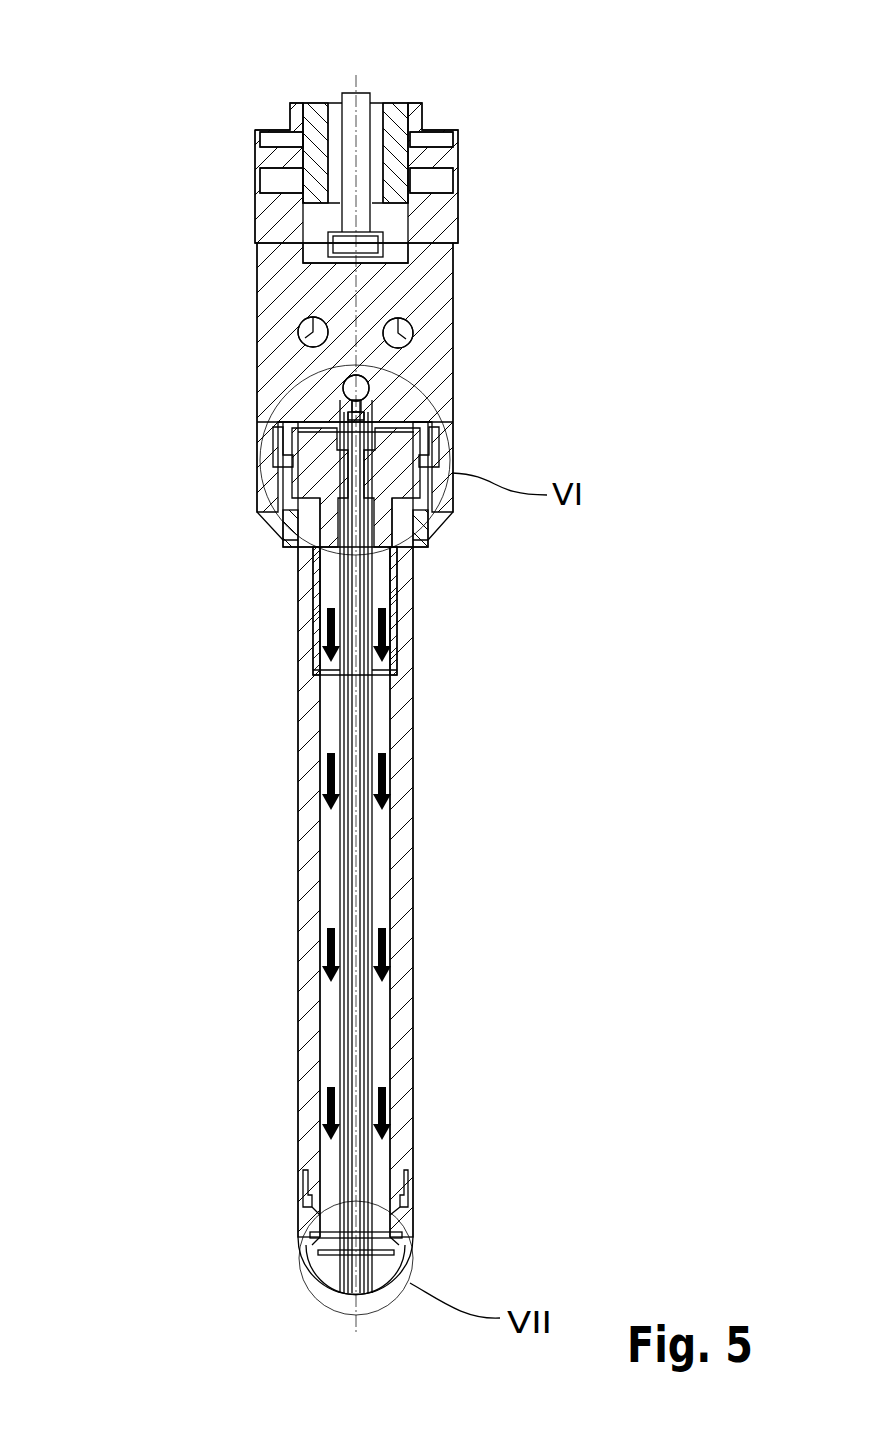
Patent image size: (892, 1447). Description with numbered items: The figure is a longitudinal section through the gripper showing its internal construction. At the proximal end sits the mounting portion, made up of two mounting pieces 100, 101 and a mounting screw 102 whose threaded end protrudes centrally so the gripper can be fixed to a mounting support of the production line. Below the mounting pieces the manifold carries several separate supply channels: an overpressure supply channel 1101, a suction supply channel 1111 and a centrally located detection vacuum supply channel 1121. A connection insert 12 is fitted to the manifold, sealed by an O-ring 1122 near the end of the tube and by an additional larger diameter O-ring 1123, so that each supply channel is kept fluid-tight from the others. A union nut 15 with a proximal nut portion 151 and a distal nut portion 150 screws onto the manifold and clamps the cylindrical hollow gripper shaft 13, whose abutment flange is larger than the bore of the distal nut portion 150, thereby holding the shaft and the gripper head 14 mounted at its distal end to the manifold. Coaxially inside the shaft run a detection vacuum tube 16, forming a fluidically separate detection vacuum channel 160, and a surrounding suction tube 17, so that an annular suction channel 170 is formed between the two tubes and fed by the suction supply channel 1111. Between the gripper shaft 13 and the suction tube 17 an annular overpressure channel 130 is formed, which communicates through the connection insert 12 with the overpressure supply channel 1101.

The mounting piece 100 is at (265, 208).
The mounting piece 101 is at (278, 155).
The mounting screw 102 is at (365, 130).
The overpressure supply channel 1101 is at (303, 330).
The suction supply channel 1111 is at (400, 330).
The detection vacuum supply channel 1121 is at (350, 388).
The O-ring 1122 is at (370, 386).
The larger diameter O-ring 1123 is at (365, 404).
The connection insert 12 is at (436, 506).
The gripper shaft 13 is at (305, 848).
The annular overpressure channel 130 is at (378, 693).
The gripper head 14 is at (406, 1186).
The union nut 15 is at (263, 513).
The distal nut portion 150 is at (287, 533).
The proximal nut portion 151 is at (270, 465).
The detection vacuum tube 16 is at (362, 1284).
The detection vacuum channel 160 is at (354, 916).
The suction tube 17 is at (357, 840).
The annular suction channel 170 is at (363, 825).